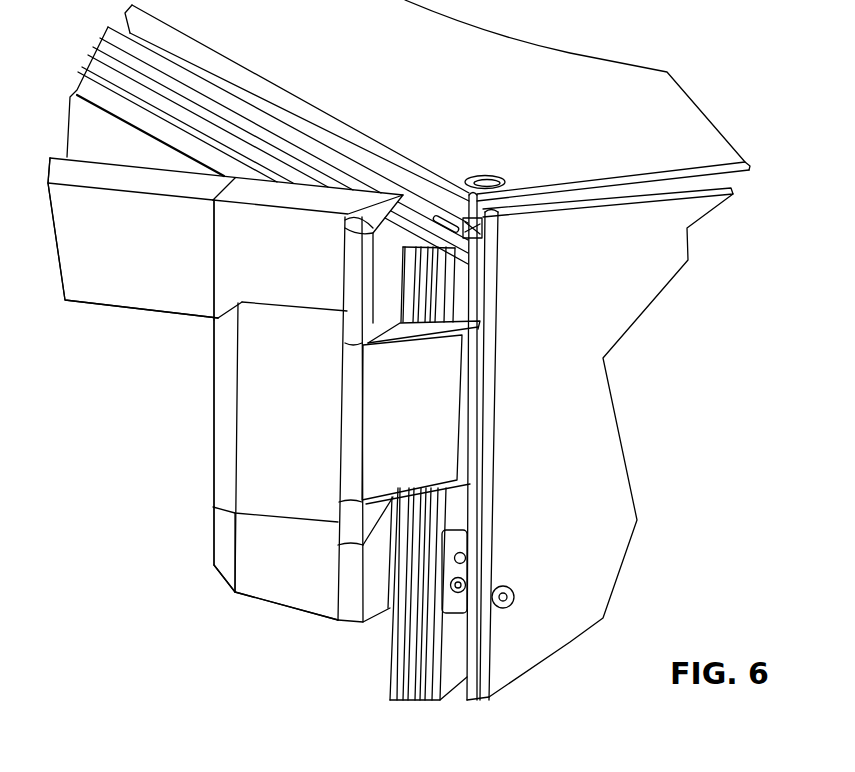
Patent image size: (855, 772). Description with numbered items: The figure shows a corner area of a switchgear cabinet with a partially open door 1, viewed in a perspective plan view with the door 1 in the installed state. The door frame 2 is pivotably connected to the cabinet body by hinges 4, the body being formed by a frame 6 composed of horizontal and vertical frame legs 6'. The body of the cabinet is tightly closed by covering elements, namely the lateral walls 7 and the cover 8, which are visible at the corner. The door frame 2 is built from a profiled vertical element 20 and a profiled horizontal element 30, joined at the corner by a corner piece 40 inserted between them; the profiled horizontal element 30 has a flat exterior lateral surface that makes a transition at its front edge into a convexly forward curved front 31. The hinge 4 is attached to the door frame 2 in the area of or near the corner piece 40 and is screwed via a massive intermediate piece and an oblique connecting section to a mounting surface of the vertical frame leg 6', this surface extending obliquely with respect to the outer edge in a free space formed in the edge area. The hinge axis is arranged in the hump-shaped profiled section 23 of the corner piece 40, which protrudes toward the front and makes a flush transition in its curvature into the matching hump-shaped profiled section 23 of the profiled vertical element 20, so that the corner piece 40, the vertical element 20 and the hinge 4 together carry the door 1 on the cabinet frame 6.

The door 1 is at (152, 543).
The door frame 2 is at (298, 625).
The hinge 4 is at (433, 427).
The frame 6 is at (452, 478).
The frame leg 6' is at (268, 132).
The lateral wall 7 is at (625, 308).
The cover 8 is at (573, 56).
The profiled vertical element 20 is at (247, 607).
The hump-shaped profiled section 23 is at (352, 608).
The profiled horizontal element 30 is at (102, 313).
The convexly forward curved front 31 is at (177, 293).
The corner piece 40 is at (213, 435).